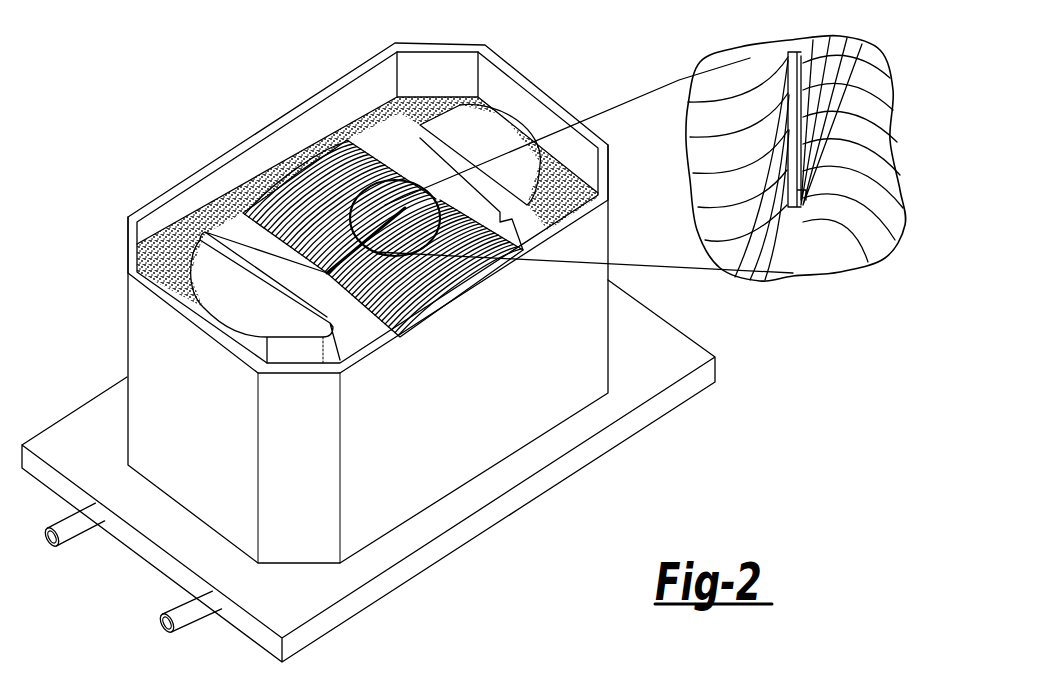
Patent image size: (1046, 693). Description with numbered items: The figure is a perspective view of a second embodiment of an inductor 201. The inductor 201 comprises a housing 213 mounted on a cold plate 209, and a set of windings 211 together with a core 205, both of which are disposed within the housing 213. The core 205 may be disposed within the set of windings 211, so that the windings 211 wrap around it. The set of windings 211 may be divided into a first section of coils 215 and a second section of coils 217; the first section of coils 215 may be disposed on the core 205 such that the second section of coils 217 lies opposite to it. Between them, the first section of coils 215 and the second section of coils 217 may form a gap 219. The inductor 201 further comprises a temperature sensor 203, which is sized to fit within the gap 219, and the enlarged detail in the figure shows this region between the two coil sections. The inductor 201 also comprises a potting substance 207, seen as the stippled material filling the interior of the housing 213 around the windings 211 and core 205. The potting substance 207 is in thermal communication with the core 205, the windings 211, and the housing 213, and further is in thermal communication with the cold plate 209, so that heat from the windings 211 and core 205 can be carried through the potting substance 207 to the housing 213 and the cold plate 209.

The inductor 201 is at (388, 352).
The temperature sensor 203 is at (640, 220).
The core 205 is at (251, 321).
The potting substance 207 is at (323, 202).
The cold plate 209 is at (390, 471).
The set of windings 211 is at (305, 178).
The housing 213 is at (313, 303).
The first section of coils 215 is at (354, 167).
The second section of coils 217 is at (425, 275).
The gap 219 is at (444, 205).